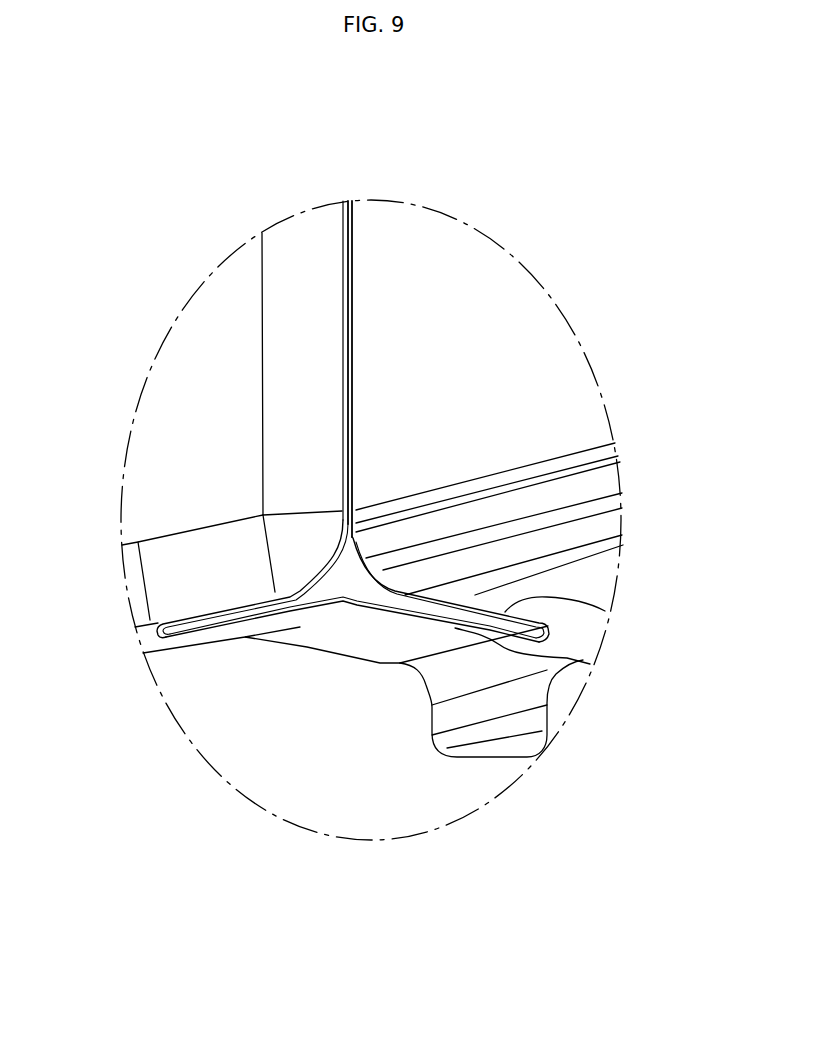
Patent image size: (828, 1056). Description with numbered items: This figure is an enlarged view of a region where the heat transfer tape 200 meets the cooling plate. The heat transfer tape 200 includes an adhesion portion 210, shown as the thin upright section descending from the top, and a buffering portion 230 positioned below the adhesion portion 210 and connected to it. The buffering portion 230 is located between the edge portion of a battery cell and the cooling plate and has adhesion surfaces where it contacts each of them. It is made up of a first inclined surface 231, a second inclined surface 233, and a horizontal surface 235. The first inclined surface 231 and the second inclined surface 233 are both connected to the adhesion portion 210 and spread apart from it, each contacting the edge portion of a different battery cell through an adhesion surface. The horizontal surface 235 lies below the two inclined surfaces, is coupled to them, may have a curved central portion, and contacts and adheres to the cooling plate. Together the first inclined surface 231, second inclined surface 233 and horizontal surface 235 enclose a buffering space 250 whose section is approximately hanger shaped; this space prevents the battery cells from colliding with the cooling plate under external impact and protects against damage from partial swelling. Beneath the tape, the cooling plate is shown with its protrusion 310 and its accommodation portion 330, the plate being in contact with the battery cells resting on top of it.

The heat transfer tape 200 is at (371, 483).
The adhesion portion 210 is at (350, 223).
The buffering portion 230 is at (483, 580).
The first inclined surface 231 is at (330, 565).
The second inclined surface 233 is at (548, 626).
The horizontal surface 235 is at (583, 660).
The buffering space 250 is at (369, 605).
The protrusion 310 is at (267, 667).
The accommodation portion 330 is at (470, 748).